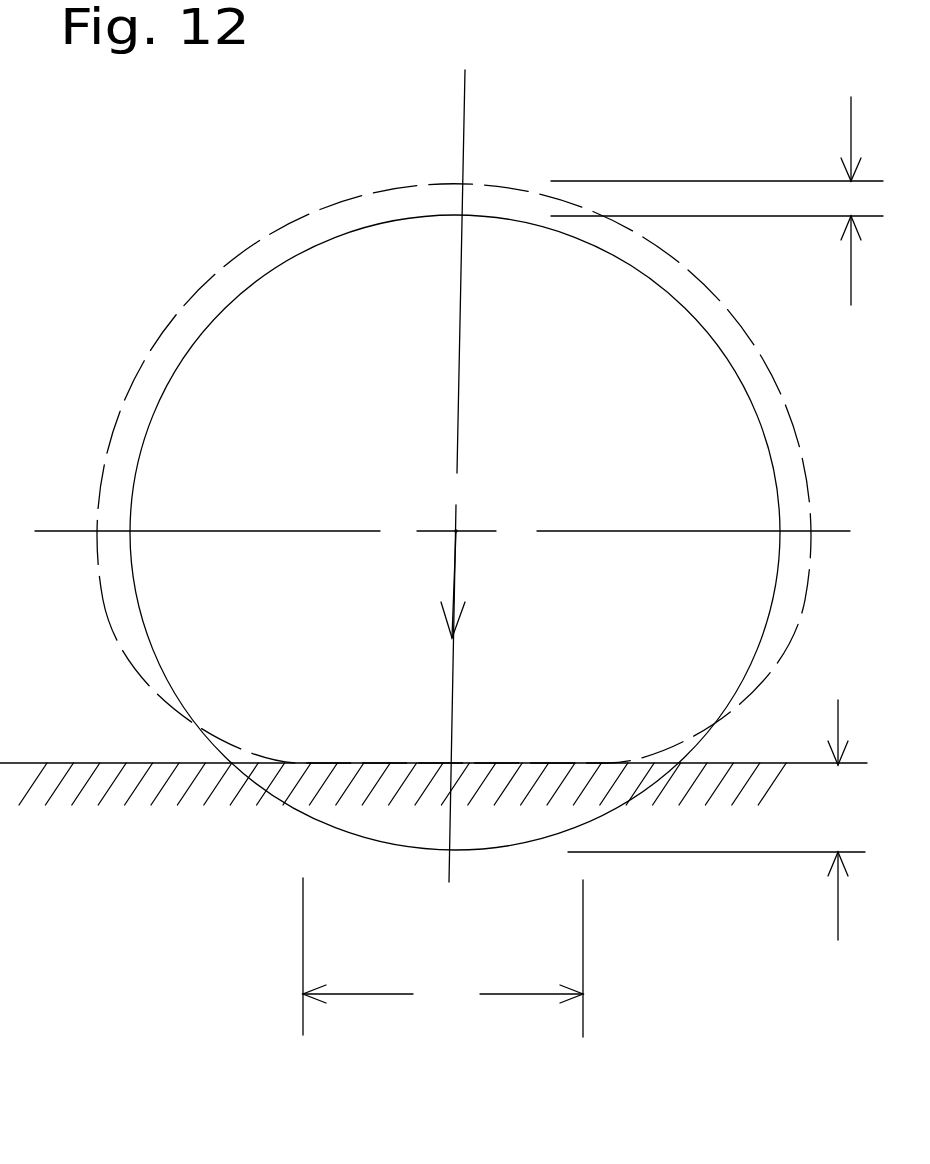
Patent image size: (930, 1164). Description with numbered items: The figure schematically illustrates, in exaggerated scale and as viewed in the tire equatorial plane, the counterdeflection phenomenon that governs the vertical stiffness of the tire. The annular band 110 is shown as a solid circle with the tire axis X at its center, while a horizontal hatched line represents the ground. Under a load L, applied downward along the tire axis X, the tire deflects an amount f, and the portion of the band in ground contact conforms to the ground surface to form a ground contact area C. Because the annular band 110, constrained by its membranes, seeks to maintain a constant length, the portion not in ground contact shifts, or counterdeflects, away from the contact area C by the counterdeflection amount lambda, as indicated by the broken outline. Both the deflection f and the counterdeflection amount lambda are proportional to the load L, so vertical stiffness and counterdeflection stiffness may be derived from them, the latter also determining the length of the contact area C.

The annular band 110 is at (230, 304).
The tire axis X is at (456, 531).
The load L is at (473, 584).
The counterdeflection amount lambda is at (717, 201).
The vertical deflection f is at (716, 820).
The ground contact area C is at (443, 957).